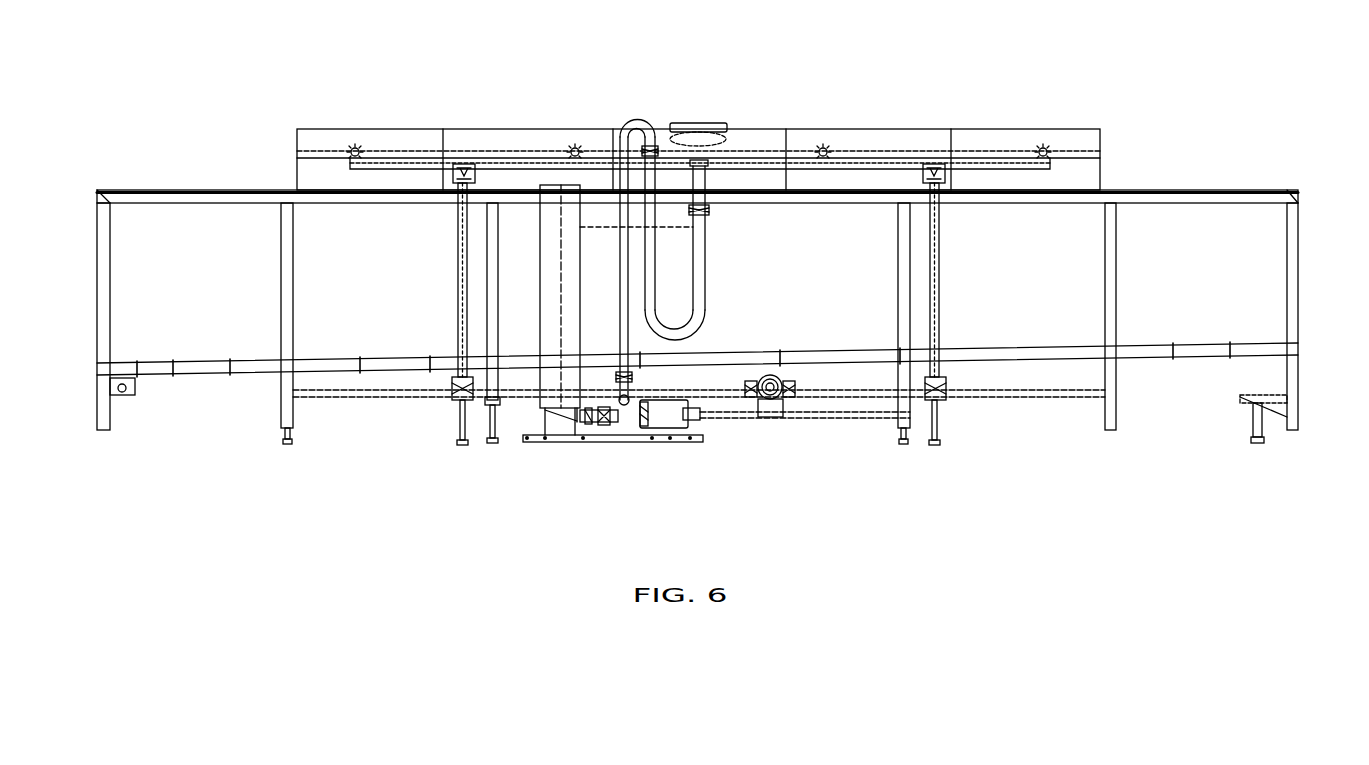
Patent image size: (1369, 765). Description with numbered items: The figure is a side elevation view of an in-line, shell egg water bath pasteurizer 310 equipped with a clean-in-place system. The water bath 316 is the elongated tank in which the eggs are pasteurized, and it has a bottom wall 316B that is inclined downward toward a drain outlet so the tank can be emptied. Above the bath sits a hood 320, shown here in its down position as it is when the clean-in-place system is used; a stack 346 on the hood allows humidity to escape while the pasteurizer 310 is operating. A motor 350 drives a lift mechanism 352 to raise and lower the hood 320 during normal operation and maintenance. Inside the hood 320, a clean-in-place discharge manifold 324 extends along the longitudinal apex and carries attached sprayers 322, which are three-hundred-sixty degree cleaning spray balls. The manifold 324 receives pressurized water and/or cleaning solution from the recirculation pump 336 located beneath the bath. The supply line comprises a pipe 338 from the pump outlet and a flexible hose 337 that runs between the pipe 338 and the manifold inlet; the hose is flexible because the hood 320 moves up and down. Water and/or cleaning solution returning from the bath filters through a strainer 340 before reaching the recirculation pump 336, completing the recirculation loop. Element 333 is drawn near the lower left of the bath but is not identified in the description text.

The in-line shell egg water bath pasteurizer 310 is at (1190, 93).
The water bath 316 is at (1293, 235).
The bottom wall 316B is at (1135, 348).
The hood 320 is at (973, 135).
The sprayers 322 is at (356, 147).
The clean-in-place discharge manifold 324 is at (870, 165).
The drive sensor 333 is at (135, 385).
The recirculation pump 336 is at (657, 420).
The flexible hose 337 is at (648, 213).
The pipe 338 is at (620, 175).
The strainer 340 is at (548, 338).
The stack 346 is at (685, 128).
The motor 350 is at (783, 402).
The lift mechanism 352 is at (458, 307).